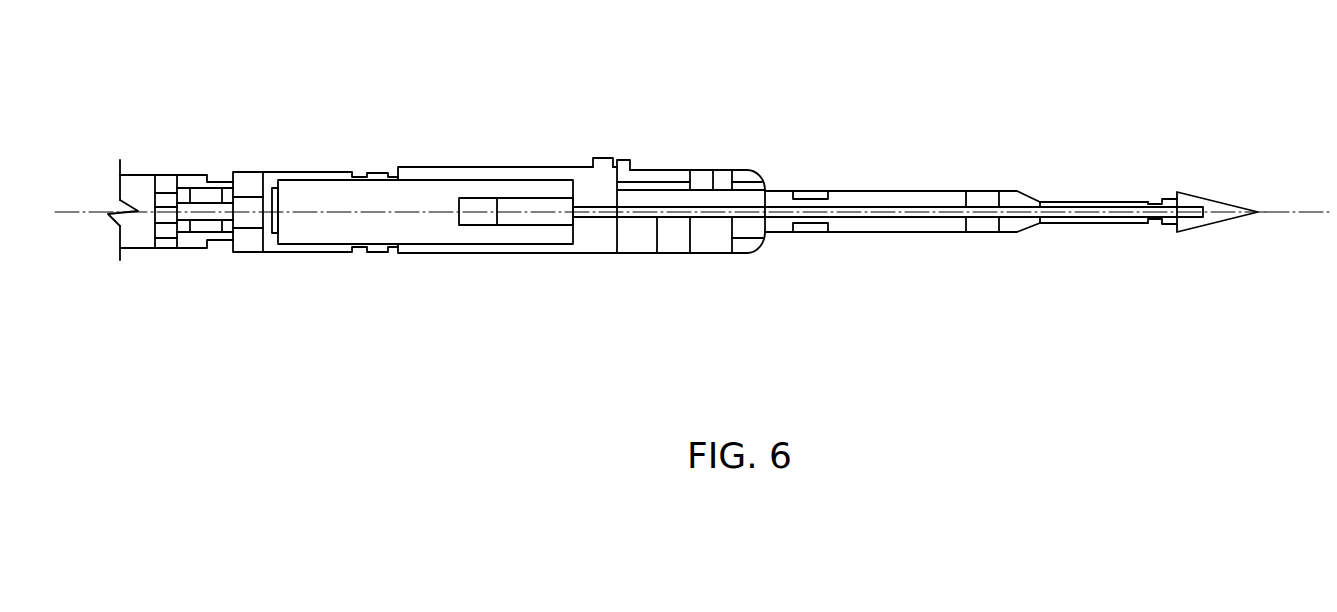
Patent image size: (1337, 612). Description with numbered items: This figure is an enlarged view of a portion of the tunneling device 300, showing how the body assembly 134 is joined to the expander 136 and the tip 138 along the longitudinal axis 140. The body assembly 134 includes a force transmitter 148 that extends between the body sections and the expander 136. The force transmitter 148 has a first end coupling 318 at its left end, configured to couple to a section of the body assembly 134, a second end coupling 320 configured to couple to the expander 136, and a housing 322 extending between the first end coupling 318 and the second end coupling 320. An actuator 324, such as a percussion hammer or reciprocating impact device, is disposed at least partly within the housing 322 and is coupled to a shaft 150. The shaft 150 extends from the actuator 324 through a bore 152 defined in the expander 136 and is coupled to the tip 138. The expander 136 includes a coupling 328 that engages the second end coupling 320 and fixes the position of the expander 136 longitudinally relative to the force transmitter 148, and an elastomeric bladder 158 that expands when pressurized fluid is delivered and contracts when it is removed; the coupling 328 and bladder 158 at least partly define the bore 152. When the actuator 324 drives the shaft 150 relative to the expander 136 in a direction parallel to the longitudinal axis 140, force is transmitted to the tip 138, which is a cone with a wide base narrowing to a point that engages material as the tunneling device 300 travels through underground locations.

The tunneling device 300 is at (173, 58).
The body assembly 134 is at (224, 146).
The first end coupling 318 is at (218, 277).
The housing 322 is at (613, 277).
The actuator 324 is at (323, 198).
The force transmitter 148 is at (487, 156).
The second end coupling 320 is at (602, 158).
The coupling 328 is at (630, 160).
The expander 136 is at (1148, 277).
The bladder 158 is at (848, 192).
The shaft 150 is at (907, 208).
The bore 152 is at (957, 198).
The tip 138 is at (1162, 277).
The longitudinal axis 140 is at (1303, 212).